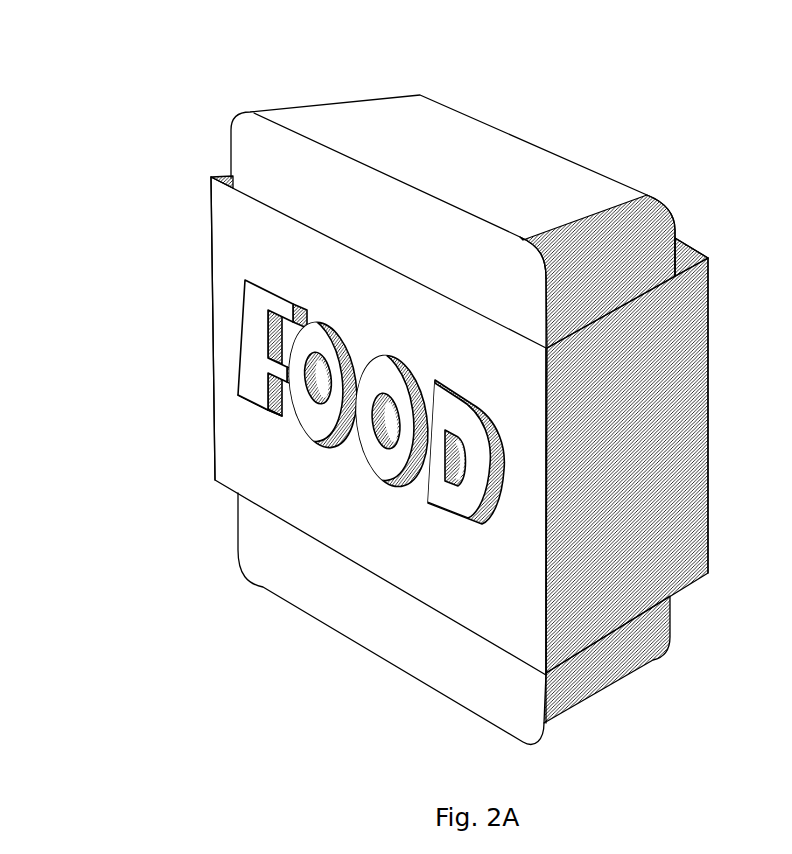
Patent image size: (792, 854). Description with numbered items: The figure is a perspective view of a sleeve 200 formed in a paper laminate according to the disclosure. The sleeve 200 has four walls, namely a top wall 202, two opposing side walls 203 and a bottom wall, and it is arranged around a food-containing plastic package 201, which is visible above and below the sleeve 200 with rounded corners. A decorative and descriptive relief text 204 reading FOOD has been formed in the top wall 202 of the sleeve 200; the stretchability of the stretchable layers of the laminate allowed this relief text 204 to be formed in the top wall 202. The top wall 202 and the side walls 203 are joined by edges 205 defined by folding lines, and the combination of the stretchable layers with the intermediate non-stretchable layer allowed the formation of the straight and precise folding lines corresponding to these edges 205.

The sleeve 200 is at (138, 281).
The food-containing plastic package 201 is at (533, 112).
The top wall 202 is at (235, 452).
The side walls 203 is at (687, 380).
The relief text 204 is at (257, 300).
The edges 205 is at (210, 348).